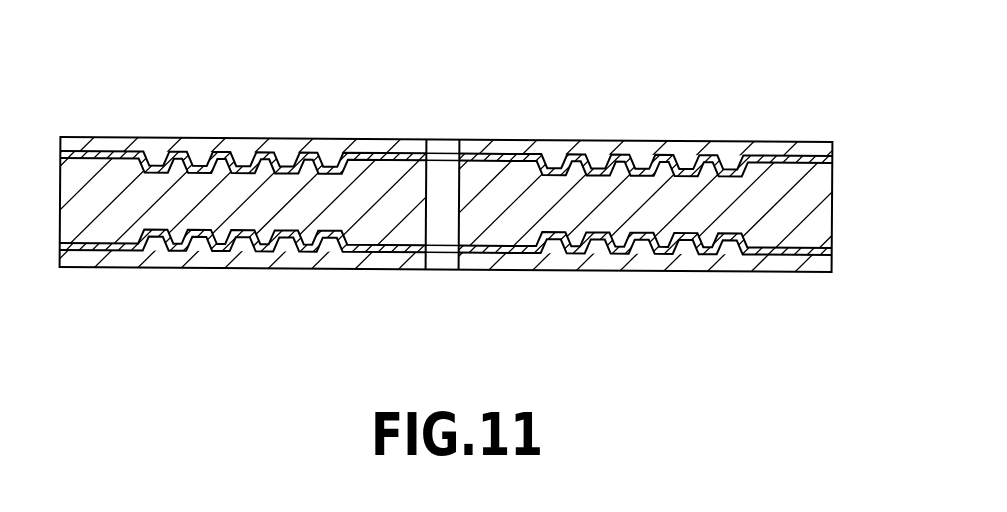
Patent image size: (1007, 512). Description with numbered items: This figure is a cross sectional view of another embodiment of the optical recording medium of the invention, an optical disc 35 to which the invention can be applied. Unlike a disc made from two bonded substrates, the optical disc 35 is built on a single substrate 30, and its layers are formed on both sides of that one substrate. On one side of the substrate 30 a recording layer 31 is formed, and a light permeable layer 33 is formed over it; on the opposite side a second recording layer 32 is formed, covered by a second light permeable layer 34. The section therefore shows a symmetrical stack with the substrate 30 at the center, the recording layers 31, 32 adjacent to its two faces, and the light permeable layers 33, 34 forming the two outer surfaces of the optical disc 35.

The optical disc 35 is at (724, 121).
The light permeable layer 33 is at (832, 144).
The recording layer 31 is at (832, 157).
The substrate 30 is at (818, 215).
The recording layer 32 is at (830, 255).
The light permeable layer 34 is at (830, 272).